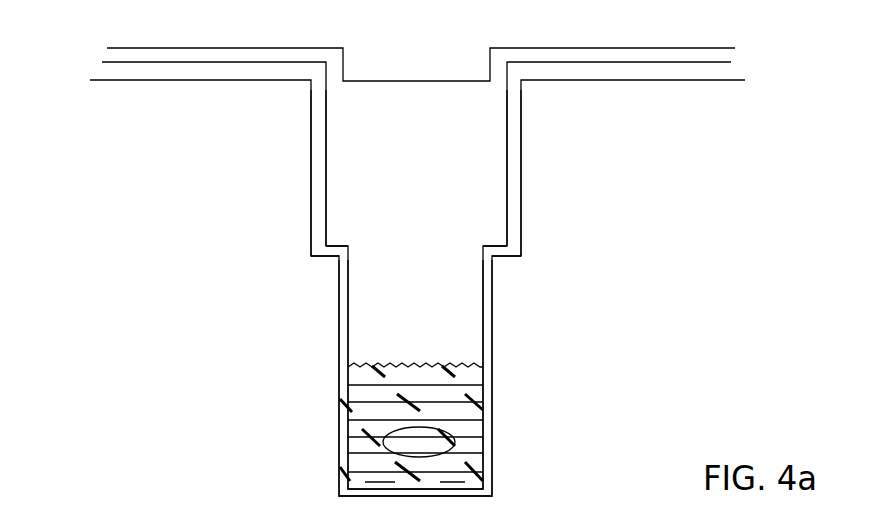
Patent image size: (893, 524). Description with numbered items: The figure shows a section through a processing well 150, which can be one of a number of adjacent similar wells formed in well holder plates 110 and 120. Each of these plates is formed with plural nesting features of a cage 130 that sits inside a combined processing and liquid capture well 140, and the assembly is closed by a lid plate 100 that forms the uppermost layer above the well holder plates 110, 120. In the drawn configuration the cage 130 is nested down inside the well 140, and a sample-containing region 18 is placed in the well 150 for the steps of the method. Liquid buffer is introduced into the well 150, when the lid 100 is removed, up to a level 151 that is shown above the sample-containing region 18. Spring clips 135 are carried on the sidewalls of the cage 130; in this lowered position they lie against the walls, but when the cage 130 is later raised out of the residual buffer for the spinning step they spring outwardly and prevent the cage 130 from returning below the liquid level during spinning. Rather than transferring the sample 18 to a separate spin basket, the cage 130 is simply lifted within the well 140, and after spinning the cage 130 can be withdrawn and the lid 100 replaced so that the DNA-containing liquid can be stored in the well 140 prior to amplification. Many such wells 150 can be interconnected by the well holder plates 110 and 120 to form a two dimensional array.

The lid plate 100 is at (408, 81).
The well holder plate 110 is at (222, 62).
The well holder plate 120 is at (247, 80).
The cage 130 is at (507, 232).
The spring clips 135 is at (324, 207).
The combined processing and liquid capture well 140 is at (492, 330).
The processing well 150 is at (252, 312).
The liquid buffer level 151 is at (418, 362).
The sample-containing region 18 is at (440, 440).